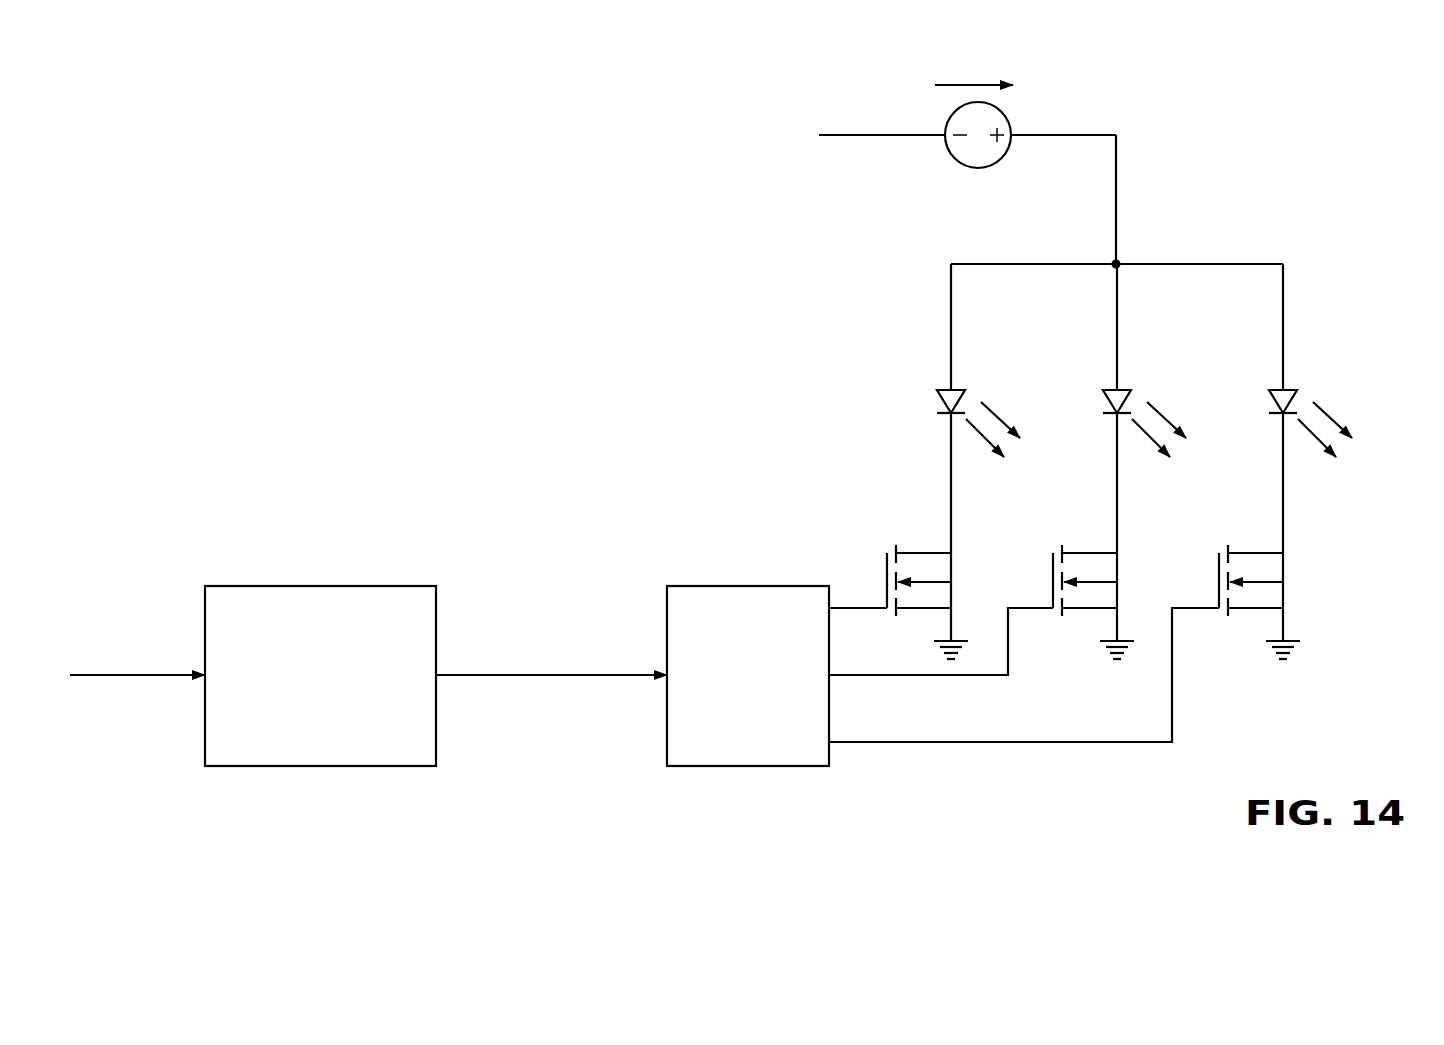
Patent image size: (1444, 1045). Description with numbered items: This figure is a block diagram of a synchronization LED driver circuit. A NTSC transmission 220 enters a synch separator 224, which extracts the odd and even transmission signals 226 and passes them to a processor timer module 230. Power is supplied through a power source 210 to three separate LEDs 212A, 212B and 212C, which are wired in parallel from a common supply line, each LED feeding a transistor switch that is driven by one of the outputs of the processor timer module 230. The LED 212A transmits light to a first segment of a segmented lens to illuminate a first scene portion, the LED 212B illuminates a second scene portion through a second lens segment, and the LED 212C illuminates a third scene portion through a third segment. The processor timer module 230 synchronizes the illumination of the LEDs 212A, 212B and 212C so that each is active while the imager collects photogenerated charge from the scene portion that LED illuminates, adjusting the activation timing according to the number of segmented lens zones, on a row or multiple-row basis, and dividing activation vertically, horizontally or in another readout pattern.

The power source 210 is at (1003, 112).
The LED 212A is at (958, 388).
The LED 212B is at (1124, 388).
The LED 212C is at (1290, 388).
The NTSC transmission 220 is at (148, 678).
The synch separator 224 is at (237, 586).
The odd and even transmission signals 226 is at (587, 678).
The processor timer module 230 is at (700, 586).